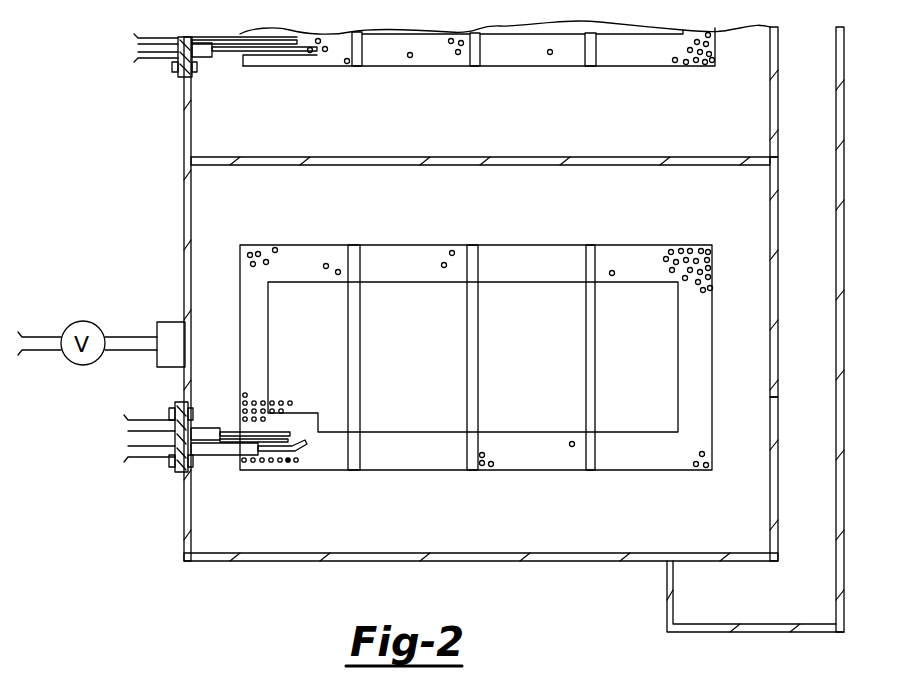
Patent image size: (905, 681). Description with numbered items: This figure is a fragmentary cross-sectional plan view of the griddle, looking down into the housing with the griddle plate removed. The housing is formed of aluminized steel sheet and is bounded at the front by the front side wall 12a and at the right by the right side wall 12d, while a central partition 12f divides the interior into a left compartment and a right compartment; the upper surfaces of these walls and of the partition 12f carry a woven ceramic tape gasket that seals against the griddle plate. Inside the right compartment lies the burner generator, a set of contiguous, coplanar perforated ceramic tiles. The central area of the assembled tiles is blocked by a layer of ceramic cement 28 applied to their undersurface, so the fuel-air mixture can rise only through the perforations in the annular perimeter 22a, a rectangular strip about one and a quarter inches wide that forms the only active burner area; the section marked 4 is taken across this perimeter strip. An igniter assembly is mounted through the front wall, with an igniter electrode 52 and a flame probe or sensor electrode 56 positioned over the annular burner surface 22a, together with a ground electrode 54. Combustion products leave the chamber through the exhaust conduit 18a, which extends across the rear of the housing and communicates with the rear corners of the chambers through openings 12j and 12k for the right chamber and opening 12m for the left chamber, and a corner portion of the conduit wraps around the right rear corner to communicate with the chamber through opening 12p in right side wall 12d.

The front side wall 12a is at (184, 503).
The right side wall 12d is at (562, 556).
The central partition 12f is at (487, 157).
The opening 12j is at (770, 208).
The opening 12k is at (770, 500).
The opening 12m is at (770, 95).
The opening 12p is at (716, 558).
The conduit 18a is at (846, 258).
The annular perimeter 22a is at (412, 262).
The layer of ceramic cement 28 is at (425, 352).
The igniter electrode 52 is at (288, 463).
The ground electrode 54 is at (286, 440).
The flame probe or sensor electrode 56 is at (228, 425).
The section line for FIG. 4 is at (568, 268).